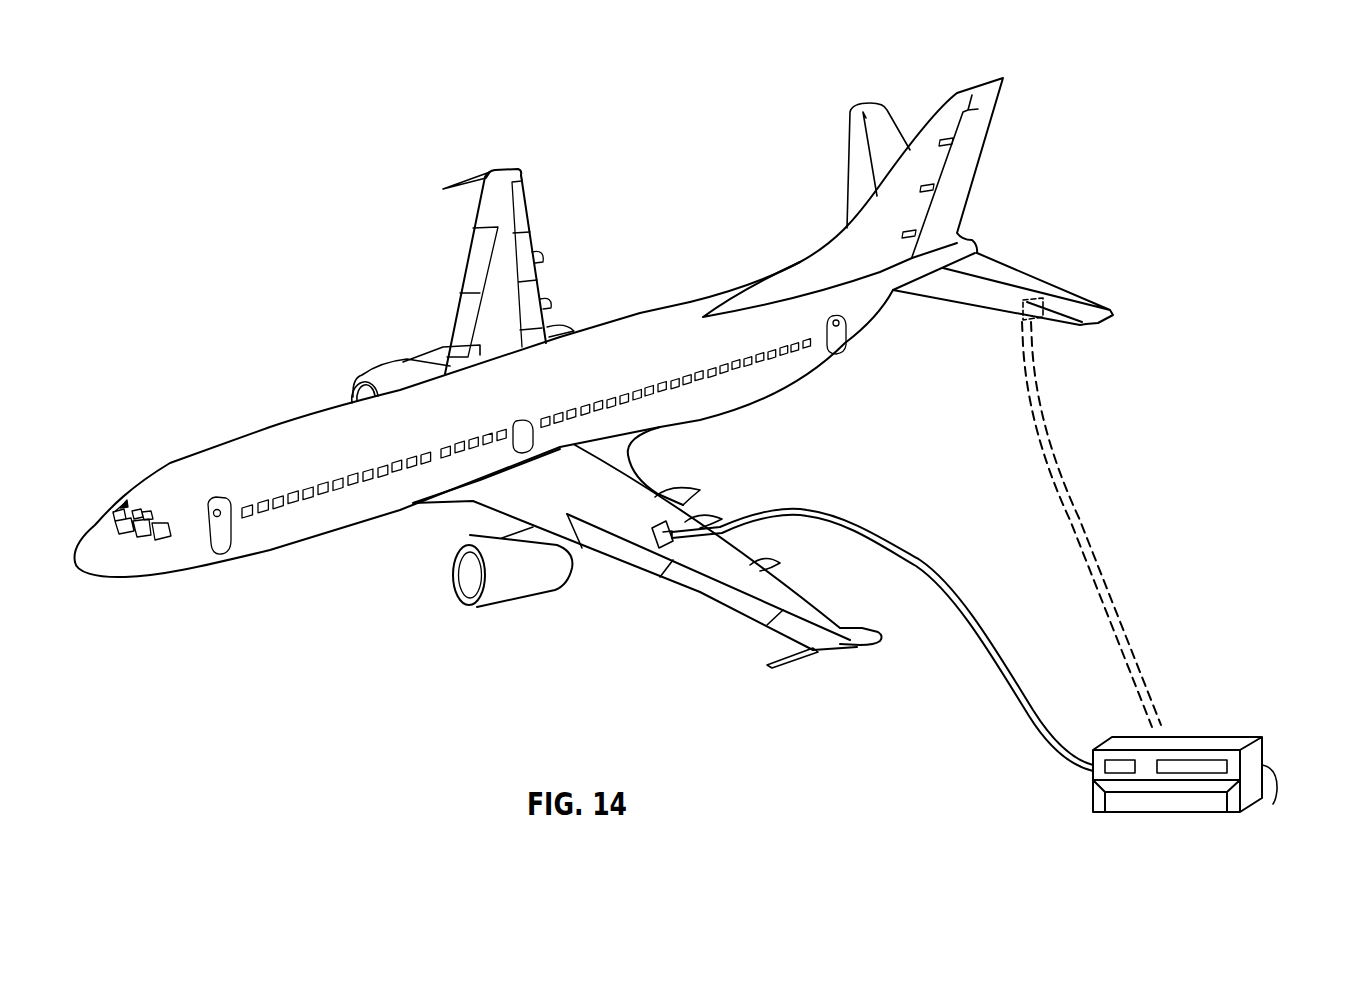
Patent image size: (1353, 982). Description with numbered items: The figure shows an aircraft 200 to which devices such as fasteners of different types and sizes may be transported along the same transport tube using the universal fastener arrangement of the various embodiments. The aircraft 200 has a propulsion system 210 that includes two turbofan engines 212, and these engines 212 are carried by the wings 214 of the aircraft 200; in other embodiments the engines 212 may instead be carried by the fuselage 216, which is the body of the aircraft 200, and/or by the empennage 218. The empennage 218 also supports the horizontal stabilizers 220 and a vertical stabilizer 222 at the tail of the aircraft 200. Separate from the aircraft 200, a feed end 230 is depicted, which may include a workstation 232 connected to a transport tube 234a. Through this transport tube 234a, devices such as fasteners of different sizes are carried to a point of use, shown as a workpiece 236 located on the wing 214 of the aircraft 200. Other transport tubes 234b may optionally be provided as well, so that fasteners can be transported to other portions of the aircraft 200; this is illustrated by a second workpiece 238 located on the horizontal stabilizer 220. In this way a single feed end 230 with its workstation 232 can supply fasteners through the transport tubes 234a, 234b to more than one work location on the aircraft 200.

The aircraft 200 is at (258, 108).
The propulsion system 210 is at (442, 581).
The turbofan engines 212 is at (527, 580).
The wings 214 is at (866, 630).
The fuselage 216 is at (287, 537).
The empennage 218 is at (706, 290).
The horizontal stabilizers 220 is at (877, 110).
The vertical stabilizer 222 is at (957, 100).
The feed end 230 is at (1211, 723).
The workstation 232 is at (1275, 801).
The transport tube 234a is at (995, 573).
The other transport tube 234b is at (1118, 590).
The workpiece 236 is at (700, 505).
The workpiece 238 is at (1042, 300).